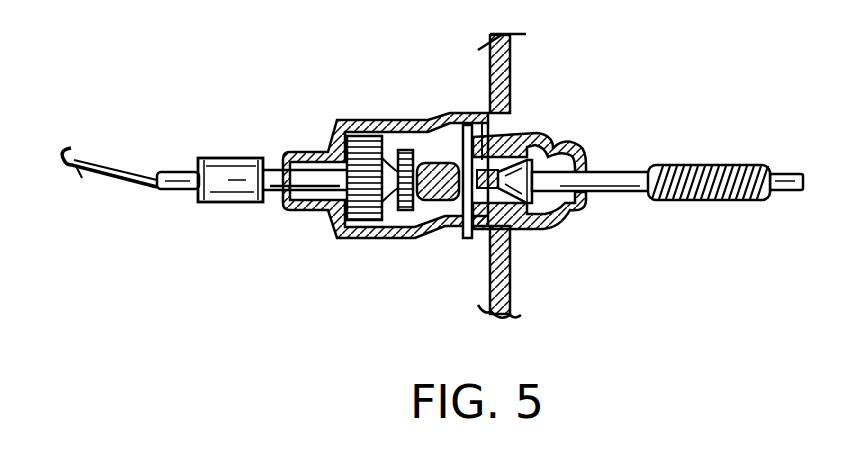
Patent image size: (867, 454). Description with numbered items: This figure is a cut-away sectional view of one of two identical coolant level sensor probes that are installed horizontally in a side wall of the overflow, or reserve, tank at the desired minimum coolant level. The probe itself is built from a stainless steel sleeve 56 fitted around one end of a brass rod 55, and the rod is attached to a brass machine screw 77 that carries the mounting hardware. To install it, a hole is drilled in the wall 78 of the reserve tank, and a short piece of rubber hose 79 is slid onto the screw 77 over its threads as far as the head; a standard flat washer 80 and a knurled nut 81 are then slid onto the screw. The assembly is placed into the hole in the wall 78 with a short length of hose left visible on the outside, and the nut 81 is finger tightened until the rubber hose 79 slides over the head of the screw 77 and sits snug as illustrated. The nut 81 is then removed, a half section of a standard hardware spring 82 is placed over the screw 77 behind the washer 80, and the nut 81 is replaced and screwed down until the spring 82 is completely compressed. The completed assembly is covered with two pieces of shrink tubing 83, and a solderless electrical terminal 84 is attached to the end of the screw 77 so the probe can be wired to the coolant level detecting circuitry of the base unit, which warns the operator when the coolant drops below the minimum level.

The brass rod 55 is at (628, 173).
The stainless steel sleeve 56 is at (700, 166).
The brass machine screw 77 is at (540, 225).
The wall 78 is at (512, 60).
The rubber hose 79 is at (573, 134).
The flat washer 80 is at (466, 240).
The knurled nut 81 is at (103, 176).
The spring 82 is at (430, 242).
The shrink tubing 83 is at (442, 118).
The solderless electrical terminal 84 is at (241, 203).